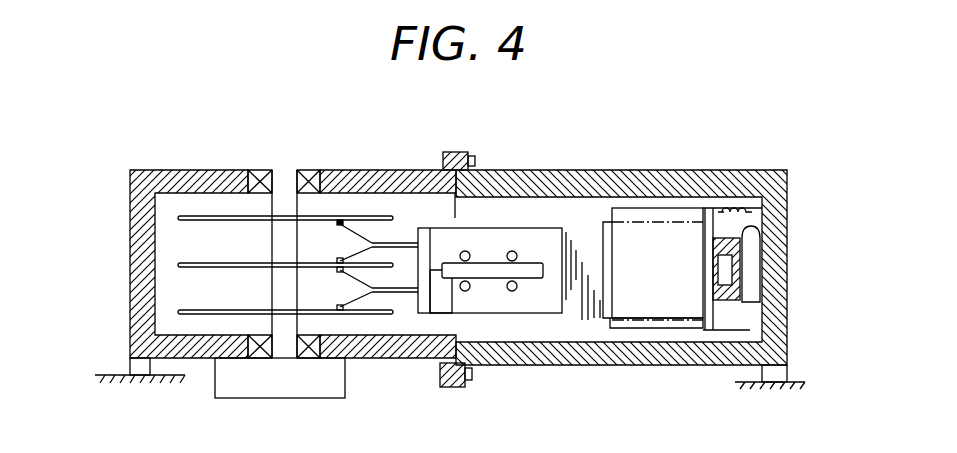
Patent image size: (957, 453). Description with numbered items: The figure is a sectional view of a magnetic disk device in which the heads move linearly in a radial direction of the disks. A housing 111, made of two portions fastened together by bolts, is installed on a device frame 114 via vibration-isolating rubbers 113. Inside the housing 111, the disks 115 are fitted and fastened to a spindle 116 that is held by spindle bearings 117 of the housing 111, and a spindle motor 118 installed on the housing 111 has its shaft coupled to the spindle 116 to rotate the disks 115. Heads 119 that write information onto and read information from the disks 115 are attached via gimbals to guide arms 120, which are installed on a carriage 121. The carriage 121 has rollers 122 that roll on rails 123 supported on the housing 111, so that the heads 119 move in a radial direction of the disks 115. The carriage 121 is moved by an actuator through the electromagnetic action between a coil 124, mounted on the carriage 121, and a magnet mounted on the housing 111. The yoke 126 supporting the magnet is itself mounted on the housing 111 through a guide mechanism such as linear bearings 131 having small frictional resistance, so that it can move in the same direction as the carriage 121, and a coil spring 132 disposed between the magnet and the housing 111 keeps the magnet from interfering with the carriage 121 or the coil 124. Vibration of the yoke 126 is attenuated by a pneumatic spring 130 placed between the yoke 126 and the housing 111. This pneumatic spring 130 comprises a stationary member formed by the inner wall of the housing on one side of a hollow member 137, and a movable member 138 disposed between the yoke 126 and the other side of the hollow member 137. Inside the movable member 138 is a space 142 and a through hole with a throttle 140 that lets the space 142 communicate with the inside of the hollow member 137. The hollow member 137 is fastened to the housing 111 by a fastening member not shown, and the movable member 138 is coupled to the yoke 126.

The housing 111 is at (130, 225).
The vibration-isolating rubbers 113 is at (133, 368).
The device frame 114 is at (112, 375).
The disks 115 is at (188, 215).
The spindle 116 is at (283, 185).
The spindle bearings 117 is at (313, 178).
The spindle motor 118 is at (306, 376).
The heads 119 is at (341, 222).
The guide arms 120 is at (404, 170).
The carriage 121 is at (548, 240).
The rollers 122 is at (512, 291).
The rails 123 is at (452, 272).
The coil 124 is at (577, 315).
The yoke 126 is at (680, 336).
The pneumatic spring 130 is at (787, 352).
The linear bearings 131 is at (625, 324).
The coil spring 132 is at (739, 206).
The hollow member 137 is at (770, 330).
The movable member 138 is at (763, 242).
The throttle 140 is at (770, 282).
The space 142 is at (715, 236).